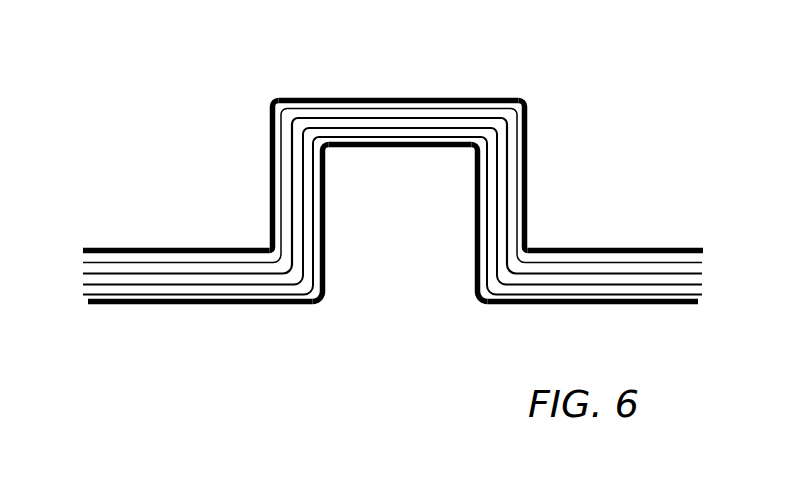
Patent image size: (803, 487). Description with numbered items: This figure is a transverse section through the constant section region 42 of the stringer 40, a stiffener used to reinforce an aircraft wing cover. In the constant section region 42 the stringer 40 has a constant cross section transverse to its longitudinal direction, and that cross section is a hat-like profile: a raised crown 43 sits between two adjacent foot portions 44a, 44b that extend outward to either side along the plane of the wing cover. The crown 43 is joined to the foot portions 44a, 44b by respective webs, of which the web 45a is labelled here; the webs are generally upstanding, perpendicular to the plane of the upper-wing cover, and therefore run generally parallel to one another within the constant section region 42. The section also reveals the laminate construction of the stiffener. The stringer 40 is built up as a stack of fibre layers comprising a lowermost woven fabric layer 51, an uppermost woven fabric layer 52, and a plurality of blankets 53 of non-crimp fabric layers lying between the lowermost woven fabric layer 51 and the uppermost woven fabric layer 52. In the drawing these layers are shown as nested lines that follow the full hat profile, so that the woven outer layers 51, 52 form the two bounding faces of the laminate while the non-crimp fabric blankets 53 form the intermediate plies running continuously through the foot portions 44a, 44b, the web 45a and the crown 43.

The stringer 40 is at (384, 198).
The constant section region 42 is at (568, 200).
The crown 43 is at (353, 78).
The foot portion 44a is at (189, 272).
The foot portion 44b is at (640, 234).
The web 45a is at (252, 144).
The lowermost woven fabric layer 51 is at (112, 303).
The uppermost woven fabric layer 52 is at (98, 255).
The blankets of non-crimp fabric layers 53 is at (264, 290).